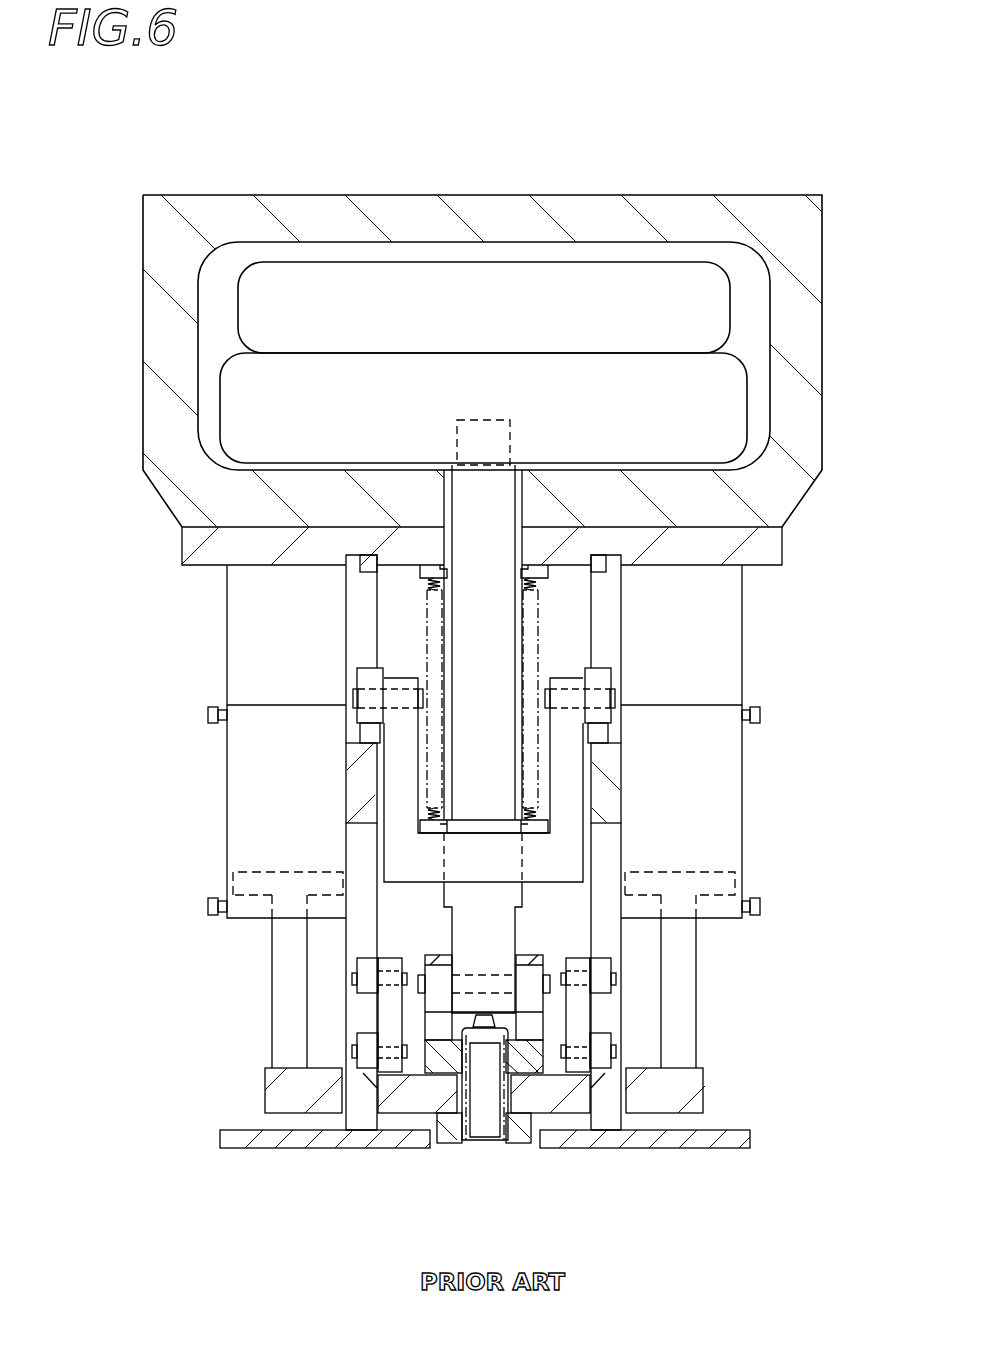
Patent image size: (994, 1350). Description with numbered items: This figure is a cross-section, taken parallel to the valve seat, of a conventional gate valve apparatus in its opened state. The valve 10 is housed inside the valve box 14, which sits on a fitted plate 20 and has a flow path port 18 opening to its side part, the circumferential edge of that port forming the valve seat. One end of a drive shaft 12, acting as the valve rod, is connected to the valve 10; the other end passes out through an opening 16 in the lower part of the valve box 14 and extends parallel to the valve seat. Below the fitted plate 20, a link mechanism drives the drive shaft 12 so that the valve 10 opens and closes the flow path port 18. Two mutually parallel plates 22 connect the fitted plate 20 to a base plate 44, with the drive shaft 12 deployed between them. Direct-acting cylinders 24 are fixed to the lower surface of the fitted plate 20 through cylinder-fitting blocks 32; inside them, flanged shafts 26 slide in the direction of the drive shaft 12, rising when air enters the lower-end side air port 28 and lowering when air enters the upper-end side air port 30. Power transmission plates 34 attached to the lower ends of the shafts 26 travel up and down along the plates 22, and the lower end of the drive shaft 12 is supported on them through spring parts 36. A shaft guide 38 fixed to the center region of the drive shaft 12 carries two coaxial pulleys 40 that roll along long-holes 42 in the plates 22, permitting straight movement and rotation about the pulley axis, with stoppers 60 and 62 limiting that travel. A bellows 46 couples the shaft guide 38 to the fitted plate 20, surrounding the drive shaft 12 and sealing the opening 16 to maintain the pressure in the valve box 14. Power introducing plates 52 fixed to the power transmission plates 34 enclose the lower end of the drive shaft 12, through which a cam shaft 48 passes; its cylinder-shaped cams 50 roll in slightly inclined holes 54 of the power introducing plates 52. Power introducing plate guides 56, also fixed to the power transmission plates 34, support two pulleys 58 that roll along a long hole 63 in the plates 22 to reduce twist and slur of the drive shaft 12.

The valve 10 is at (608, 373).
The drive shaft 12 is at (500, 760).
The valve box 14 is at (371, 206).
The opening 16 is at (445, 508).
The flow path port 18 is at (487, 285).
The fitted plate 20 is at (768, 541).
The plates 22 is at (352, 780).
The direct-acting cylinders 24 is at (727, 815).
The shafts 26 is at (693, 958).
The lower-end side air port 28 is at (762, 908).
The upper-end side air port 30 is at (762, 717).
The cylinder-fitting blocks 32 is at (727, 630).
The power transmission plates 34 is at (685, 1088).
The spring parts 36 is at (475, 1108).
The shaft guide 38 is at (397, 848).
The pulleys 40 is at (602, 678).
The long-holes 42 is at (358, 610).
The base plate 44 is at (745, 1138).
The bellows 46 is at (540, 590).
The cam shaft 48 is at (467, 983).
The cams 50 is at (533, 1000).
The power introducing plates 52 is at (520, 1067).
The holes 54 is at (445, 1033).
The power introducing plate guides 56 is at (578, 1067).
The pulleys 58 is at (602, 1042).
The stopper 60 is at (600, 566).
The stopper 62 is at (598, 732).
The long hole 63 is at (355, 937).